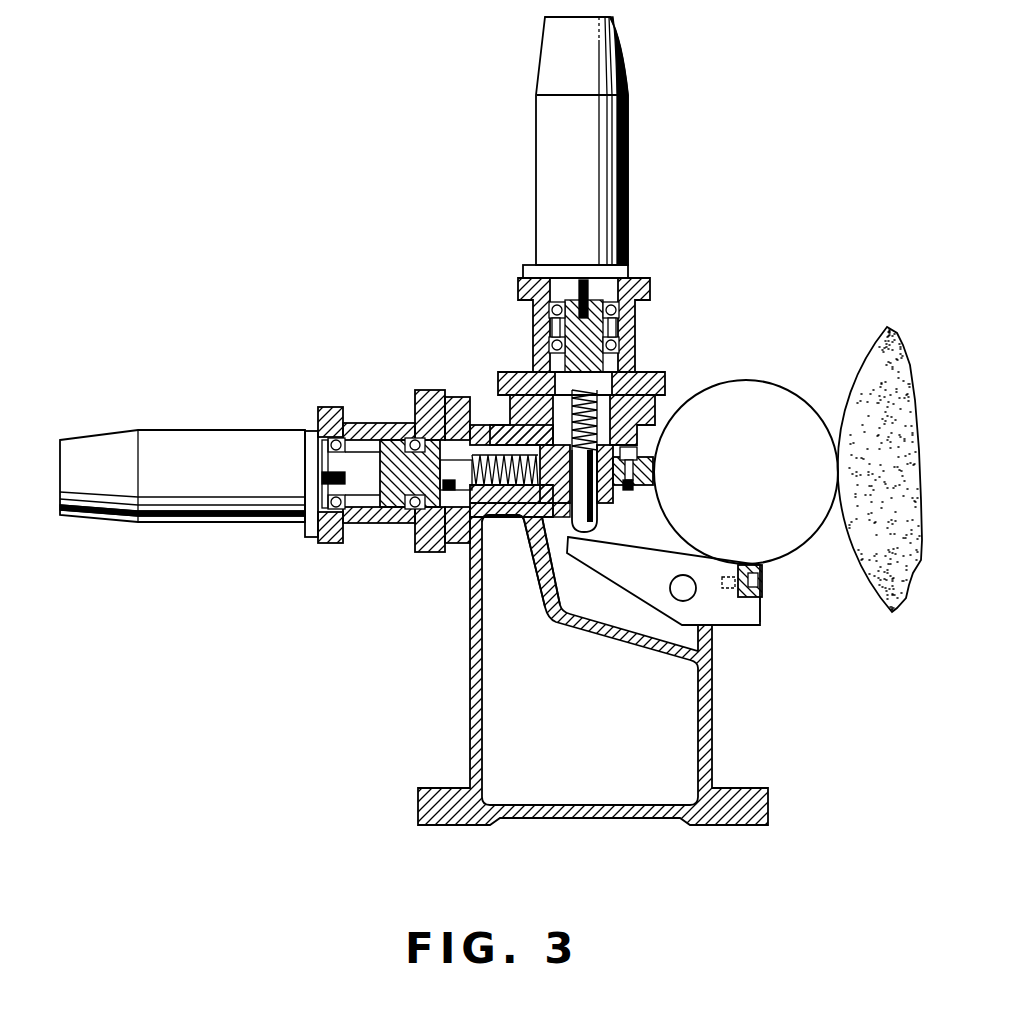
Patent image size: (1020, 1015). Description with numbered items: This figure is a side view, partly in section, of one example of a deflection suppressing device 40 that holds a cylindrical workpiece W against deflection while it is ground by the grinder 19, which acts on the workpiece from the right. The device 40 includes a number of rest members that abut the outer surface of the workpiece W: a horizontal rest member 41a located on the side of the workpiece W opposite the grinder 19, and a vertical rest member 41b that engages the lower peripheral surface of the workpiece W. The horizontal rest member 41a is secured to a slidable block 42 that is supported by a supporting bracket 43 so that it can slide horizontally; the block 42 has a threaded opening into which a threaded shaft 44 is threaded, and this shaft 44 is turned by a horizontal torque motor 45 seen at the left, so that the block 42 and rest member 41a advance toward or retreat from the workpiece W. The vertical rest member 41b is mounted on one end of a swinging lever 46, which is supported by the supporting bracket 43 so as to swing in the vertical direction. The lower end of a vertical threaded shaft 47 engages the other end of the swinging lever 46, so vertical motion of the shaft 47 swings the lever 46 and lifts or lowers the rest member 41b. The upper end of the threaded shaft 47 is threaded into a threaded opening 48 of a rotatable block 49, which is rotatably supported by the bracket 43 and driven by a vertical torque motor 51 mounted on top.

The deflection suppressing device 40 is at (472, 356).
The horizontal rest member 41a is at (653, 465).
The vertical rest member 41b is at (762, 568).
The slidable block 42 is at (524, 530).
The supporting bracket 43 is at (470, 689).
The threaded shaft 44 is at (468, 562).
The horizontal torque motor 45 is at (193, 523).
The swinging lever 46 is at (633, 582).
The vertical threaded shaft 47 is at (540, 578).
The threaded opening 48 is at (636, 368).
The rotatable block 49 is at (613, 327).
The vertical torque motor 51 is at (628, 134).
The workpiece W is at (752, 382).
The grinder 19 is at (862, 362).